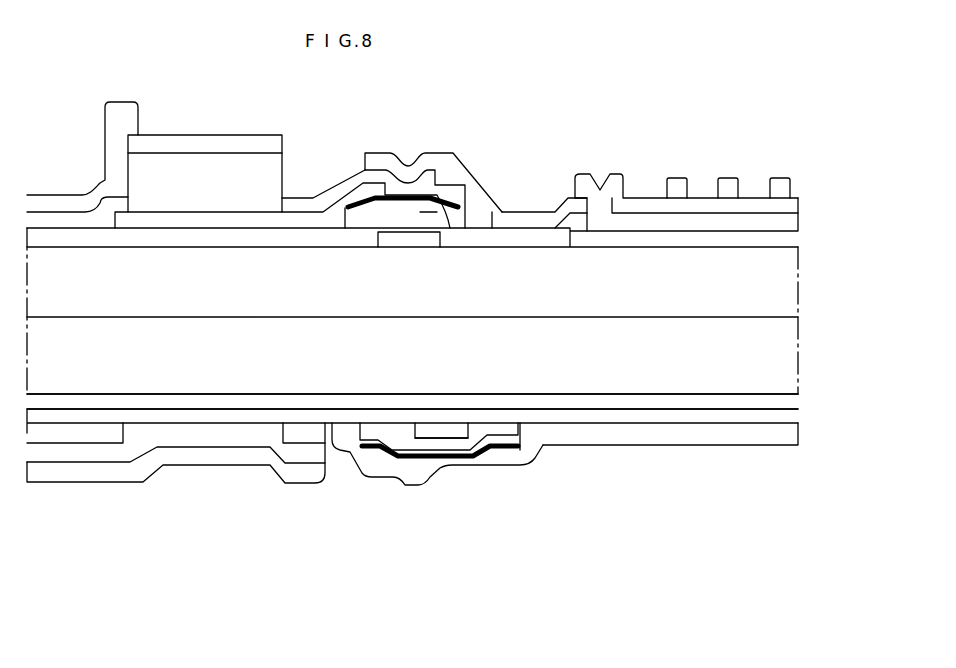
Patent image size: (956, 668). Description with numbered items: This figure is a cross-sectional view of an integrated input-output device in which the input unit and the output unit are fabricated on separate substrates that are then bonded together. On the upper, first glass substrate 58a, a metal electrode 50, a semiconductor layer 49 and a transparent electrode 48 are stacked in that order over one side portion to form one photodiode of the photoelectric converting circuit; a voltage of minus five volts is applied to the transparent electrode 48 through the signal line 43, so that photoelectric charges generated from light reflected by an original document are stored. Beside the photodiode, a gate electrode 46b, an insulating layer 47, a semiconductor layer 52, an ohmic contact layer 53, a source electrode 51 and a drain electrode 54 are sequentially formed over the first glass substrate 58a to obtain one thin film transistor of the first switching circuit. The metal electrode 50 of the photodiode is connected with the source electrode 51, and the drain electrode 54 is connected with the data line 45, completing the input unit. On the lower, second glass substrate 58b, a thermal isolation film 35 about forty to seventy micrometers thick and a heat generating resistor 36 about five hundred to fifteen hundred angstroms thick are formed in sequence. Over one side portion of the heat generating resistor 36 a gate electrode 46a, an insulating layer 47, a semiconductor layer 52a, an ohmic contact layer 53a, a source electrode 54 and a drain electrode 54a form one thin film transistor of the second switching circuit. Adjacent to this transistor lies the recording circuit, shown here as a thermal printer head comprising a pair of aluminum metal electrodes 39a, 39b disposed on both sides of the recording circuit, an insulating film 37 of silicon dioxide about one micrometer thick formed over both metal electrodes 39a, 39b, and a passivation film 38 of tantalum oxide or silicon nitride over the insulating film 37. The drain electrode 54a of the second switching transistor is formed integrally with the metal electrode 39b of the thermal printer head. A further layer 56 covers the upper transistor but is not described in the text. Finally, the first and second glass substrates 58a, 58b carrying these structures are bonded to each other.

The thermal isolation film 35 is at (790, 400).
The heat generating resistor 36 is at (790, 431).
The insulating film 37 is at (88, 455).
The passivation film 38 is at (148, 470).
The metal electrode 39a is at (40, 437).
The metal electrode 39b is at (303, 440).
The signal line 43 is at (90, 190).
The data line 45 is at (613, 240).
The gate electrode 46a is at (445, 428).
The gate electrode 46b is at (417, 240).
The insulating layer 47 is at (168, 238).
The transparent electrode 48 is at (228, 142).
The semiconductor layer 49 is at (170, 160).
The metal electrode 50 is at (235, 228).
The source electrode 51 is at (293, 218).
The semiconductor layer 52 is at (353, 218).
The semiconductor layer 52a is at (453, 455).
The ohmic contact layer 53 is at (481, 210).
The ohmic contact layer 53a is at (413, 462).
The drain electrode 54 is at (502, 203).
The drain electrode 54a is at (380, 462).
The passivation film 56 is at (346, 165).
The first glass substrate 58a is at (788, 283).
The second glass substrate 58b is at (788, 337).